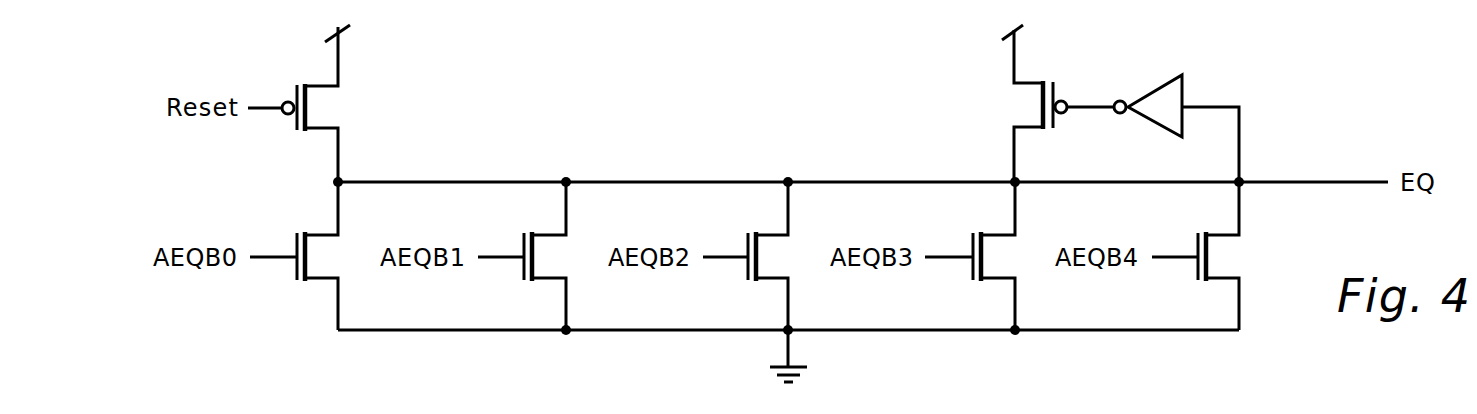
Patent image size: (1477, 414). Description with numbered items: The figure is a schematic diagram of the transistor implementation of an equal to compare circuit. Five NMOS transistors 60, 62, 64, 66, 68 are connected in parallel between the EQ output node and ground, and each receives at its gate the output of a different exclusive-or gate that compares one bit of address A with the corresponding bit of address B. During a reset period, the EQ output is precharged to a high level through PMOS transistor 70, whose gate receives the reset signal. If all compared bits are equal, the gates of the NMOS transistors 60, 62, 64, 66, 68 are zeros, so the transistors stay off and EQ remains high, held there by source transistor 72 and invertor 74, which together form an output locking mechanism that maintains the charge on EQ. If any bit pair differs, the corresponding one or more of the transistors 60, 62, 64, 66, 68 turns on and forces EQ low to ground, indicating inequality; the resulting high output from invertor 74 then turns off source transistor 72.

The NMOS transistor 60 is at (313, 234).
The NMOS transistor 62 is at (542, 281).
The NMOS transistor 64 is at (766, 281).
The NMOS transistor 66 is at (991, 281).
The NMOS transistor 68 is at (1216, 281).
The PMOS transistor 70 is at (313, 85).
The source transistor 72 is at (1034, 83).
The invertor 74 is at (1136, 90).